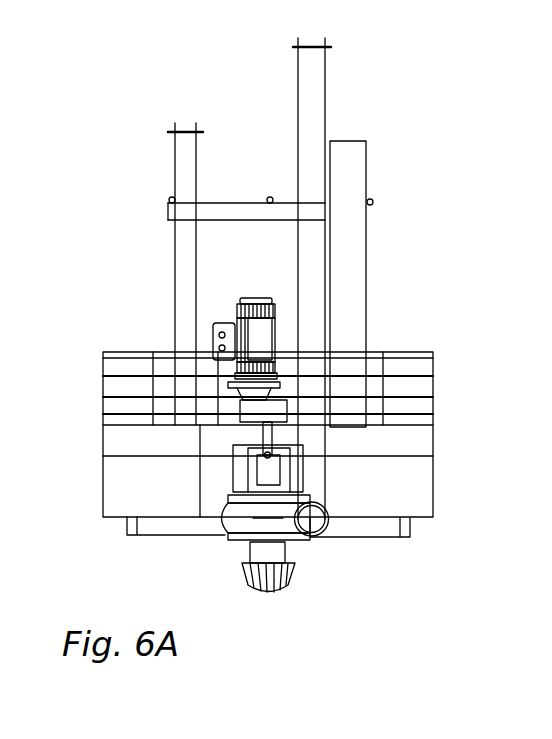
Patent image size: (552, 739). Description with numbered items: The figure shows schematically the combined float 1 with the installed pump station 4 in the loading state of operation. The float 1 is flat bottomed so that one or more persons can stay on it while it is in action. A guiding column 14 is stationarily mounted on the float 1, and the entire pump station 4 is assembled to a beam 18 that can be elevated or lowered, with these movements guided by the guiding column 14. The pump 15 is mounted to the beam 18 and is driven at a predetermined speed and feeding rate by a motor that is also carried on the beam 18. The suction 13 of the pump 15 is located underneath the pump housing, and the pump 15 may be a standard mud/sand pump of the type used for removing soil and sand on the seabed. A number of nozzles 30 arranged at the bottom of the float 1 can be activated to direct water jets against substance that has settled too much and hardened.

The float 1 is at (438, 348).
The pump station 4 is at (218, 313).
The suction 13 is at (292, 578).
The guiding column 14 is at (357, 257).
The pump 15 is at (228, 522).
The beam 18 is at (315, 73).
The nozzles 30 is at (410, 537).